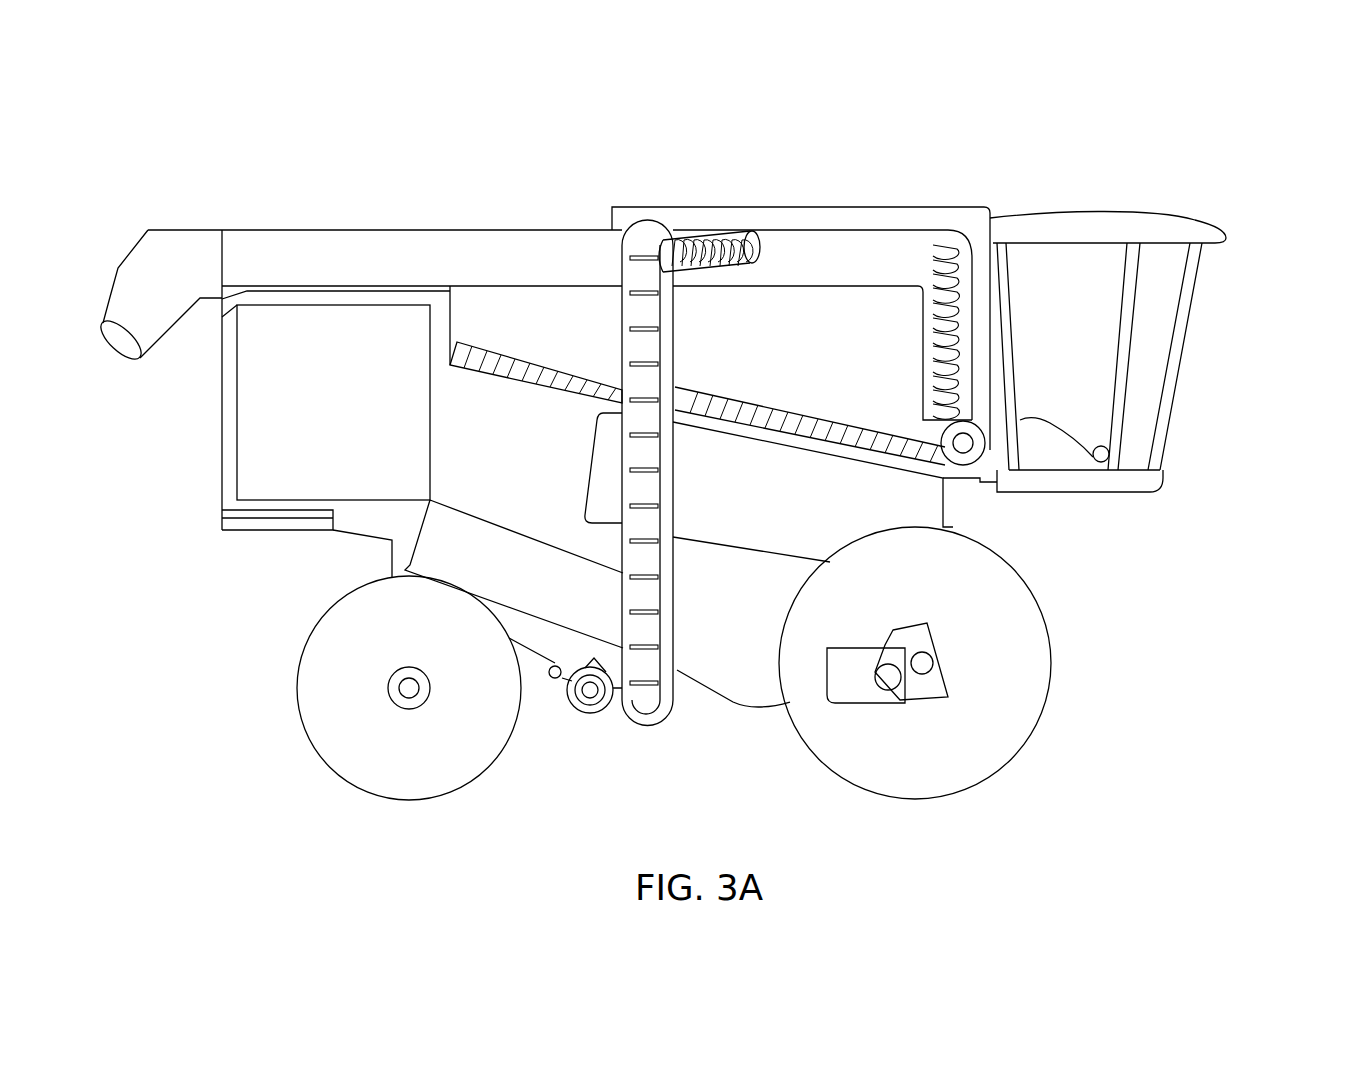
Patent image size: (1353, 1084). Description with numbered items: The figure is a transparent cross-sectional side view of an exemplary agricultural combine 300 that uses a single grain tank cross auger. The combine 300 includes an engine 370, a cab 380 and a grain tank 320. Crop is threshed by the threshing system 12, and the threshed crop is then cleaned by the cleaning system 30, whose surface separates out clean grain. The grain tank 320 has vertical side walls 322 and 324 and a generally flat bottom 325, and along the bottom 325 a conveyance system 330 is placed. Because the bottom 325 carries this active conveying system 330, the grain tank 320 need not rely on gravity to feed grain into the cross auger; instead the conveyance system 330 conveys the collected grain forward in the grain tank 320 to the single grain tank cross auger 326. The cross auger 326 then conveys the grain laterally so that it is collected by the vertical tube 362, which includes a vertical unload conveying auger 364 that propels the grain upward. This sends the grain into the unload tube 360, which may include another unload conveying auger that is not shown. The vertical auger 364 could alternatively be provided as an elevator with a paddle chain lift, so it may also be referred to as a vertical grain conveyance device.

The agricultural combine 300 is at (1043, 768).
The threshing system 12 is at (760, 533).
The cleaning system 30 is at (438, 550).
The grain tank 320 is at (803, 313).
The vertical side wall 322 is at (451, 320).
The vertical side wall 324 is at (993, 305).
The flat bottom 325 is at (485, 377).
The grain tank cross auger 326 is at (968, 468).
The conveyance system 330 is at (490, 341).
The unload tube 360 is at (278, 246).
The vertical tube 362 is at (973, 290).
The vertical unload conveying auger 364 is at (955, 287).
The engine 370 is at (280, 385).
The cab 380 is at (1133, 480).